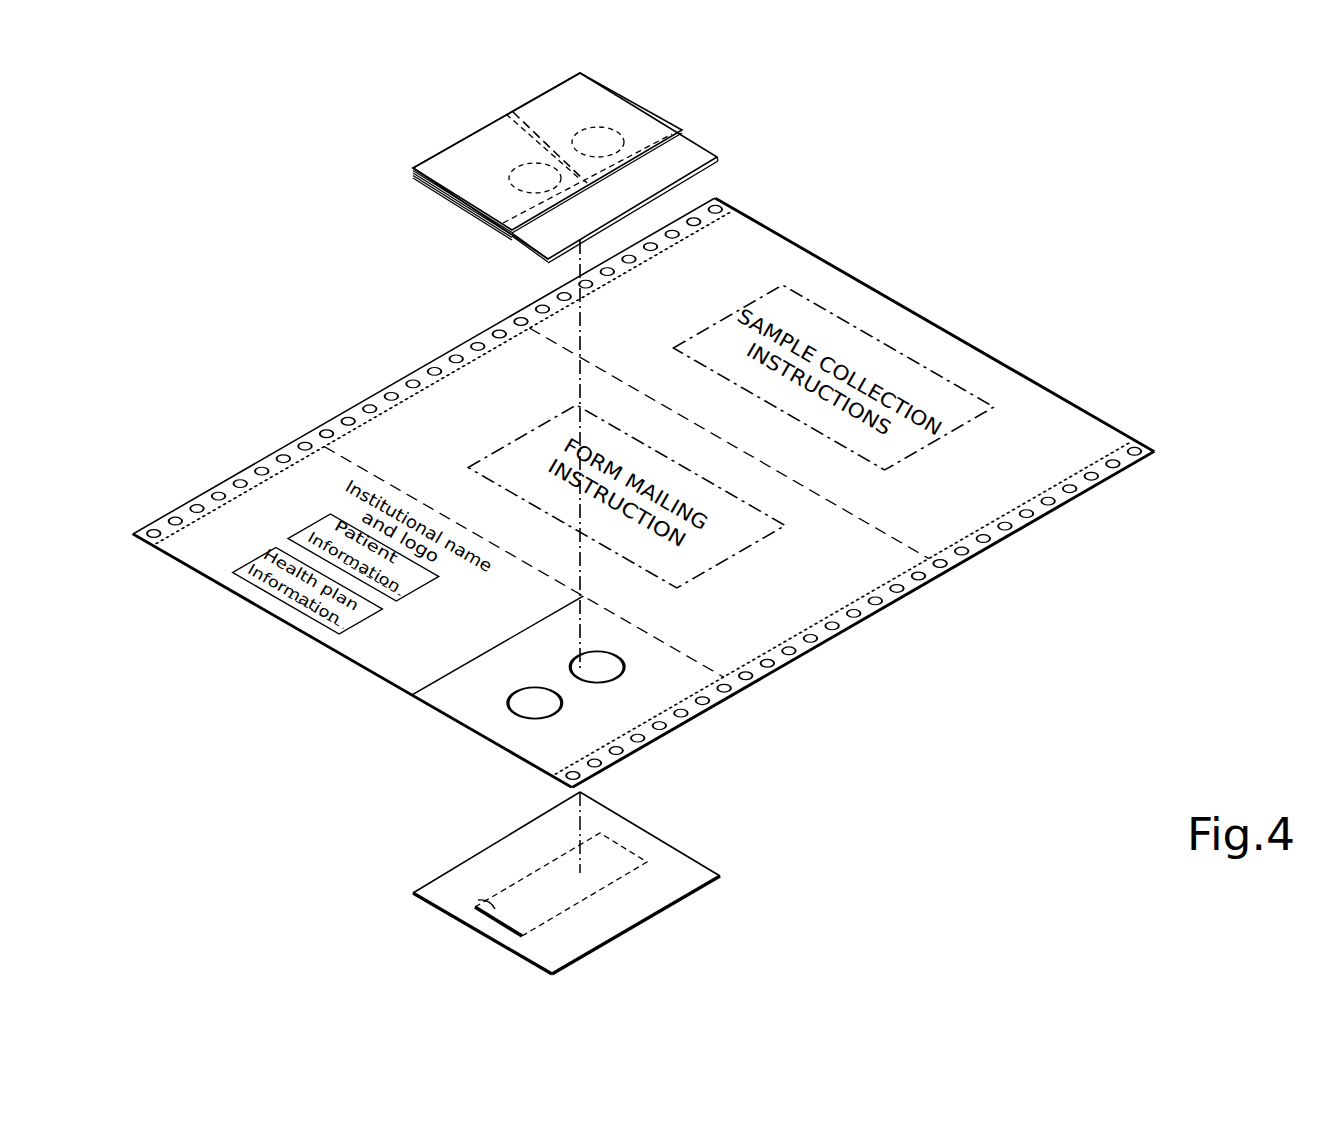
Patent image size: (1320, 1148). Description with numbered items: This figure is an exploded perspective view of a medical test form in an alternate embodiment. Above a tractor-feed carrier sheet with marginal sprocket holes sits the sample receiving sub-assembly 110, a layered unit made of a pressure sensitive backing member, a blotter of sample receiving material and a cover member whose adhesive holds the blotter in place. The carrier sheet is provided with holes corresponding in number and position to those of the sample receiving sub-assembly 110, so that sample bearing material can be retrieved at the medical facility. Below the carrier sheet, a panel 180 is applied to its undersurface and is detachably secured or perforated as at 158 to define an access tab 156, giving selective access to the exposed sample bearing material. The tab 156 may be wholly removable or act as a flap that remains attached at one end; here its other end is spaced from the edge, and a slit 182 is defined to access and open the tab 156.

The sample receiving sub-assembly 110 is at (716, 138).
The panel 180 is at (672, 875).
The perforations 158 is at (503, 889).
The access tab 156 is at (478, 900).
The slit 182 is at (503, 924).